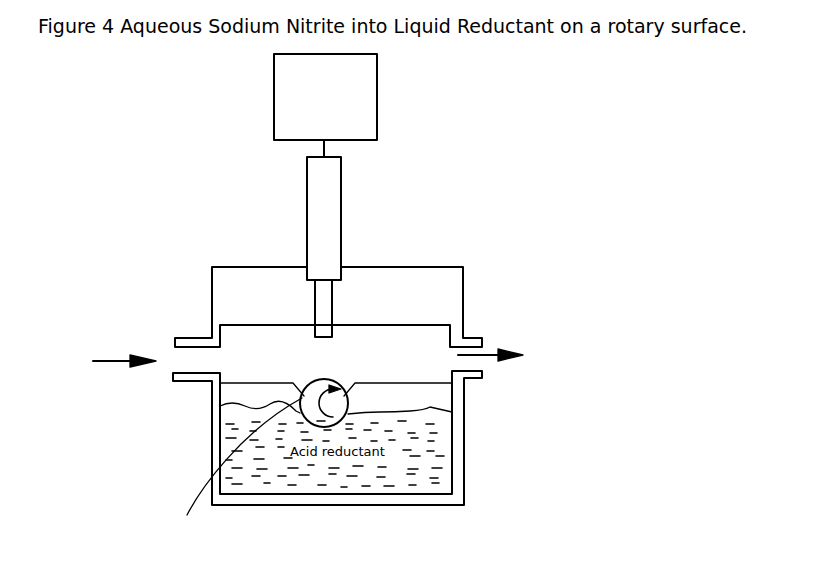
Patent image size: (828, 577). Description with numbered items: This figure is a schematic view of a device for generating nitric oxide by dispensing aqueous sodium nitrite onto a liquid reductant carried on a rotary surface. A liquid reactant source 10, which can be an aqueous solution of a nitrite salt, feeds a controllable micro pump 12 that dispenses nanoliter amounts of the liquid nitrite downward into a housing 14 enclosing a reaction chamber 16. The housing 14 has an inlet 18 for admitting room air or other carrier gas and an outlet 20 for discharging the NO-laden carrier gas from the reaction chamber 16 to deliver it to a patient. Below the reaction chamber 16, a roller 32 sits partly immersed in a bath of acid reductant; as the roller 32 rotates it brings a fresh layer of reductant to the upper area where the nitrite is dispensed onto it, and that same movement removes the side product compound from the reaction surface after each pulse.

The liquid reactant source 10 is at (377, 98).
The micro pump 12 is at (325, 207).
The housing 14 is at (243, 268).
The reaction chamber 16 is at (407, 349).
The inlet 18 is at (181, 343).
The outlet 20 is at (484, 337).
The roller 32 is at (330, 405).